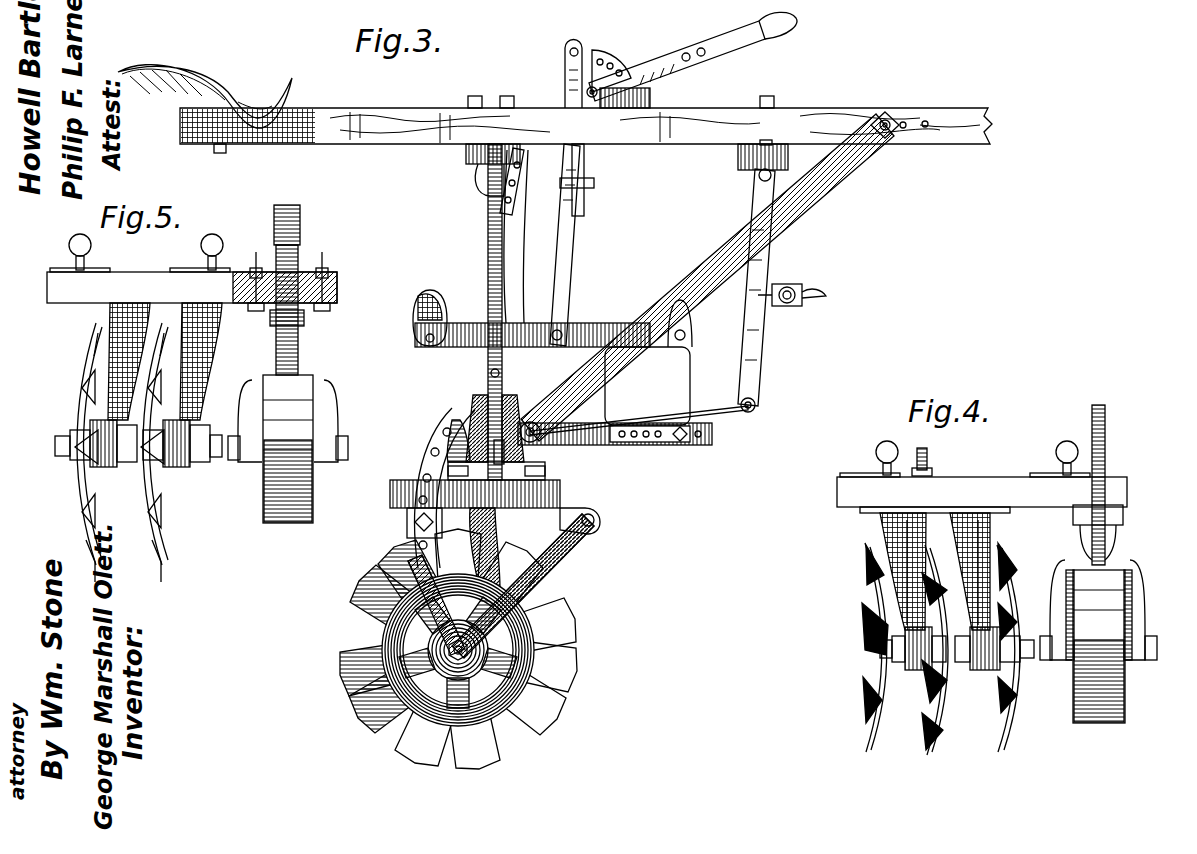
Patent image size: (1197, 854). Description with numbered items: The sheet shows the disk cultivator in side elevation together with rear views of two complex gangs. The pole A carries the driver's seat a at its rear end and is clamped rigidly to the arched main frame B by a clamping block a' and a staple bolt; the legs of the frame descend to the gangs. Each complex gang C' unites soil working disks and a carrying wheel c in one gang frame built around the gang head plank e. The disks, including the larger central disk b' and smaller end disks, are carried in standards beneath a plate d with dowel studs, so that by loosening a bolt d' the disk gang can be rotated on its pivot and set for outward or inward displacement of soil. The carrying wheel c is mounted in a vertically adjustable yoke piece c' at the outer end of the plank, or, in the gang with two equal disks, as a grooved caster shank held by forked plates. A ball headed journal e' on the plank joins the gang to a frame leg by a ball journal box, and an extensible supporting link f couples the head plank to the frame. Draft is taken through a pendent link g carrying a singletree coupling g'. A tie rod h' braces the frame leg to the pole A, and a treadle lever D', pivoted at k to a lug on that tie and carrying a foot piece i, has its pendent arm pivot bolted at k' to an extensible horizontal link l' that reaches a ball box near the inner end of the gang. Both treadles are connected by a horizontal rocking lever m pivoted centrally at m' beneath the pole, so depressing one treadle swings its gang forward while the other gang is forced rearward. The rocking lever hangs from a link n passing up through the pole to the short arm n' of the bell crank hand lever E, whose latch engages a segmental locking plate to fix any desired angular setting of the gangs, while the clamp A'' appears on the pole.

In FIG. 3, the pole A is at (586, 126).
In FIG. 3, the clamp on beam A'' is at (747, 165).
In FIG. 3, the driver's seat a is at (205, 97).
In FIG. 3, the clamping block a' is at (477, 158).
In FIG. 3, the arched main frame B is at (484, 312).
In FIG. 3, the supporting link f is at (522, 262).
In FIG. 3, the rocking lever m is at (593, 180).
In FIG. 3, the central pivot of rocking lever m' is at (566, 193).
In FIG. 3, the link n is at (557, 74).
In FIG. 3, the short arm of hand lever n' is at (605, 58).
In FIG. 3, the bell crank hand lever E is at (693, 53).
In FIG. 3, the tie rod h' is at (707, 278).
In FIG. 3, the pendent link g is at (758, 290).
In FIG. 3, the singletree coupling g' is at (772, 297).
In FIG. 3, the pivot of foot lever k is at (658, 362).
In FIG. 3, the pivot bolt k' is at (656, 451).
In FIG. 3, the horizontal link or rod l' is at (615, 449).
In FIG. 3, the foot piece i is at (429, 310).
In FIG. 3, the treadle or foot lever D' is at (532, 323).
In FIG. 3, the gang head plank e is at (475, 485).
In FIG. 5, the gang head plank e is at (192, 285).
In FIG. 4, the gang head plank e is at (982, 493).
In FIG. 5, the ball headed journal e' is at (201, 252).
In FIG. 4, the ball headed journal e' is at (1065, 450).
In FIG. 5, the carrying wheel c is at (288, 364).
In FIG. 4, the carrying wheel c is at (1099, 646).
In FIG. 3, the yoke piece c' is at (504, 583).
In FIG. 4, the yoke piece c' is at (1102, 610).
In FIG. 3, the complex gang C' is at (462, 650).
In FIG. 4, the complex gang C' is at (949, 772).
In FIG. 3, the central disk b' is at (447, 738).
In FIG. 5, the central disk b' is at (138, 442).
In FIG. 4, the central disk b' is at (957, 650).
In FIG. 4, the plate d is at (911, 571).
In FIG. 4, the bolt d' is at (939, 457).